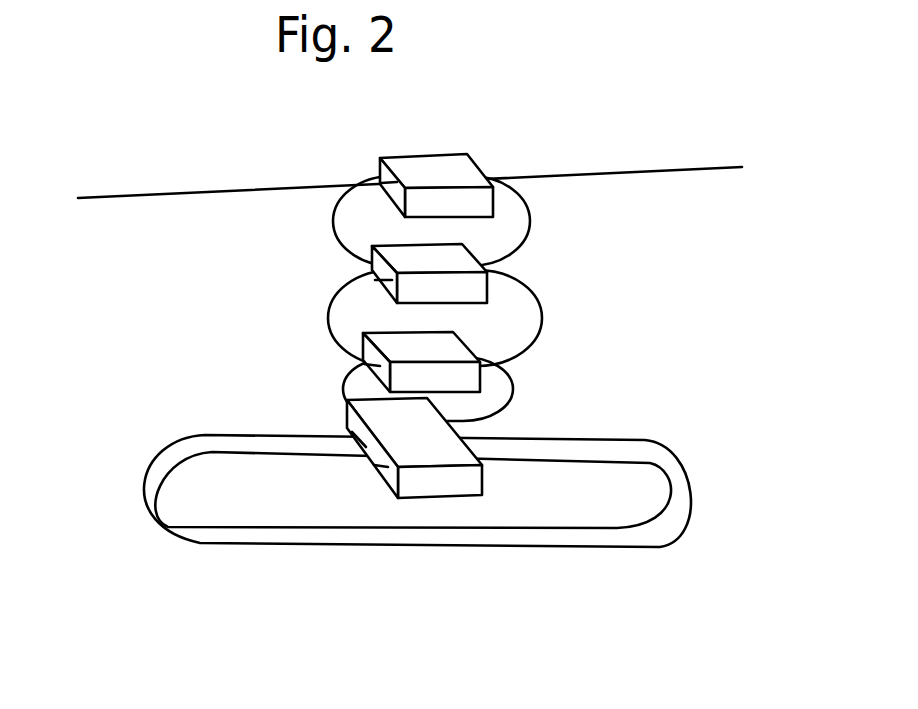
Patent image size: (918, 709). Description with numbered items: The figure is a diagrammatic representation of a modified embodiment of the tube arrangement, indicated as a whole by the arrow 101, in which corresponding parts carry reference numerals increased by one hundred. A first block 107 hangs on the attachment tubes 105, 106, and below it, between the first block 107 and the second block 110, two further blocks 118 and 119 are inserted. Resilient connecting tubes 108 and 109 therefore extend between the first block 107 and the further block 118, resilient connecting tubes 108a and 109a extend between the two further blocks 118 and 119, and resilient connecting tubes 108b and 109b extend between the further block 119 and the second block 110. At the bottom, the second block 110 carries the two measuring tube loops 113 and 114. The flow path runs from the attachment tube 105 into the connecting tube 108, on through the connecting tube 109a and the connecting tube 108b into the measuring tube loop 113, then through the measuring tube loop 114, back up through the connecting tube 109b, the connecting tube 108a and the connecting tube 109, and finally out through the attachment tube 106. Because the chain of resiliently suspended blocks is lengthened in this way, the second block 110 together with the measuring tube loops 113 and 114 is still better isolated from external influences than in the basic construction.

The hanging transport unit 101 is at (657, 272).
The attachment tube 105 is at (150, 194).
The attachment tube 106 is at (690, 169).
The first block 107 is at (438, 168).
The resilient connecting tube 108 is at (531, 215).
The resilient connecting tube 108a is at (542, 305).
The resilient connecting tube 108b is at (514, 390).
The resilient connecting tube 109 is at (334, 240).
The resilient connecting tube 109a is at (329, 318).
The resilient connecting tube 109b is at (343, 390).
The second block 110 is at (415, 488).
The measuring tube loop 113 is at (506, 531).
The measuring tube loop 114 is at (578, 548).
The further block 118 is at (458, 285).
The further block 119 is at (445, 344).